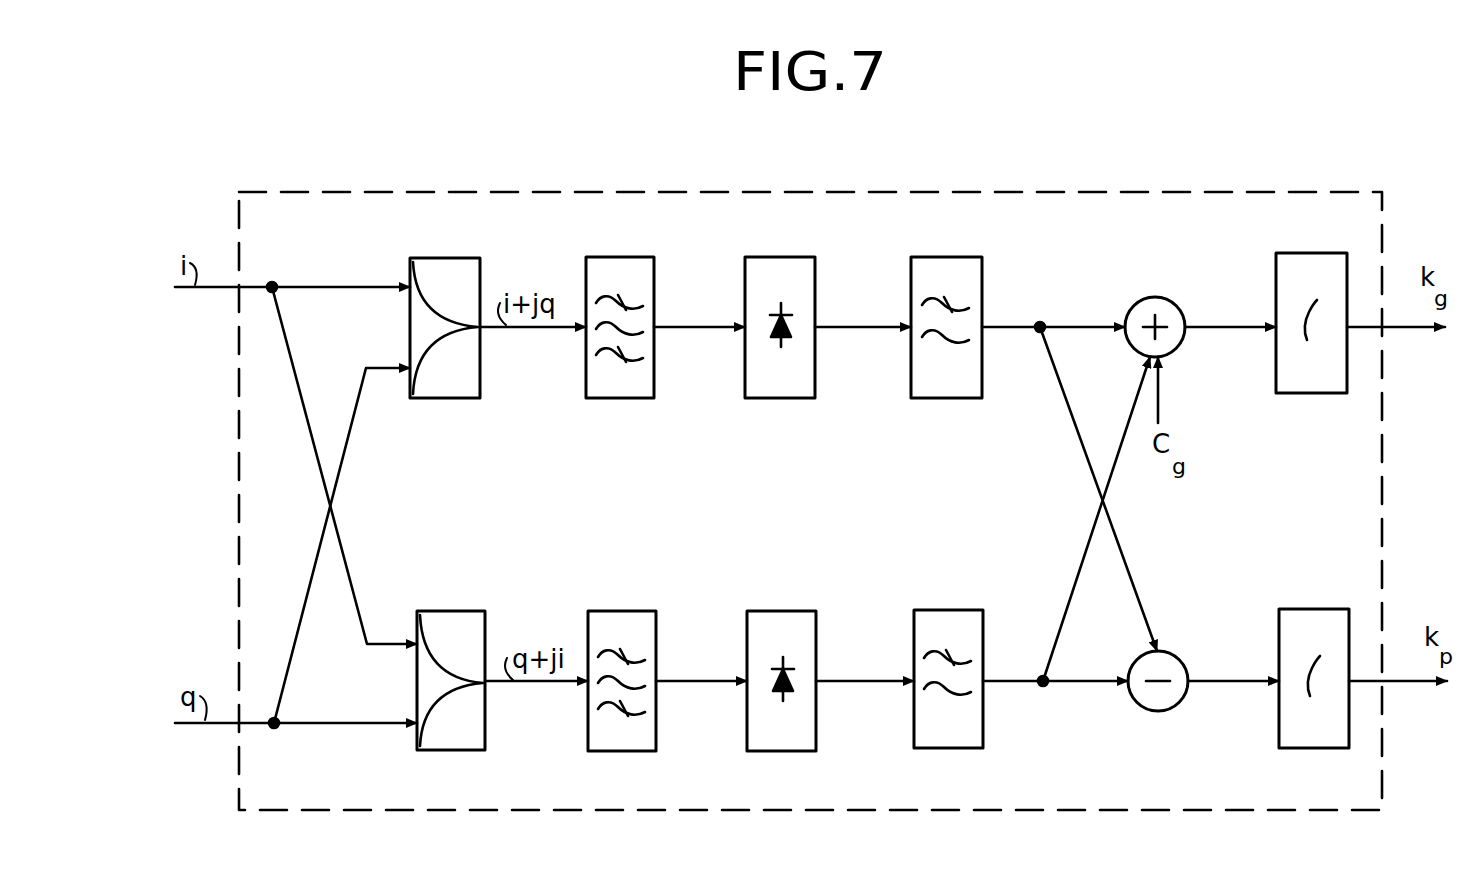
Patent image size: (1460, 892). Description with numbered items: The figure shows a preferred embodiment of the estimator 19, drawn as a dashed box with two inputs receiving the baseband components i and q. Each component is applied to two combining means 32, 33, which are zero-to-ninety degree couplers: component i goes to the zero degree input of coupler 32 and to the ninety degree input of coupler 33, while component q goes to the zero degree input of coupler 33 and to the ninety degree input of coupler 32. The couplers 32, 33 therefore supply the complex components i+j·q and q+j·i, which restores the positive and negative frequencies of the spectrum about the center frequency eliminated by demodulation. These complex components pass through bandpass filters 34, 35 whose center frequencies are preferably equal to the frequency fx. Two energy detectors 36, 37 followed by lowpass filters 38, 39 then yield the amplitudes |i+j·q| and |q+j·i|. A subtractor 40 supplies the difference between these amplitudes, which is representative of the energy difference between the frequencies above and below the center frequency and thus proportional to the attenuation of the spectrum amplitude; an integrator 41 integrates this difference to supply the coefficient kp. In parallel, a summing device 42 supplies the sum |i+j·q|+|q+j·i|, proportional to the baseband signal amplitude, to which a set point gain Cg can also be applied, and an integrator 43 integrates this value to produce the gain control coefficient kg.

The estimator 19 is at (540, 193).
The combining means 32 is at (452, 268).
The combining means 33 is at (458, 622).
The bandpass filter 34 is at (628, 265).
The bandpass filter 35 is at (625, 617).
The energy detector 36 is at (779, 264).
The energy detector 37 is at (785, 617).
The lowpass filter 38 is at (945, 265).
The lowpass filter 39 is at (948, 617).
The subtractor 40 is at (1158, 711).
The integrator 41 is at (1307, 617).
The summing device 42 is at (1154, 298).
The integrator 43 is at (1309, 260).